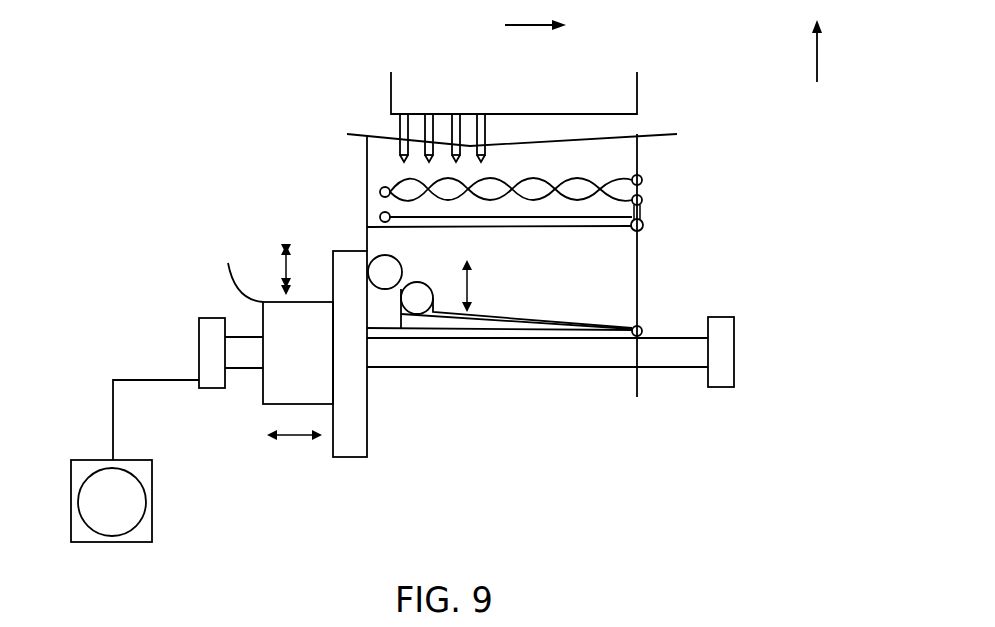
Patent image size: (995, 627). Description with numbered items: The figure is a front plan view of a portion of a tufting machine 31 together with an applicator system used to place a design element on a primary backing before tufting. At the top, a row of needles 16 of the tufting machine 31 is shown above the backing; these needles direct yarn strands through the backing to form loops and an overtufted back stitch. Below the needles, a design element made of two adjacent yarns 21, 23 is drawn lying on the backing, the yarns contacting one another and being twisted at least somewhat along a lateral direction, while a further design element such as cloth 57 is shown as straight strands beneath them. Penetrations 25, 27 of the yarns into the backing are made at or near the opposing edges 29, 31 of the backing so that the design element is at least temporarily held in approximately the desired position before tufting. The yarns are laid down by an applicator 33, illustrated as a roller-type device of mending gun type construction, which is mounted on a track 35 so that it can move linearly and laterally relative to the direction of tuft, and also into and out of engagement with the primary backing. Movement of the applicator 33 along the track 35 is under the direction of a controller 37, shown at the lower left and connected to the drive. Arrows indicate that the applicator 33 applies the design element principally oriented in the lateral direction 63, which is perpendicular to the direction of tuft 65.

The needles 16 is at (397, 130).
The yarn 21 is at (574, 180).
The yarn 23 is at (644, 200).
The penetration 25 is at (644, 180).
The penetration 27 is at (380, 217).
The edge 29 is at (386, 174).
The tufting machine 31 is at (405, 97).
The applicator 33 is at (417, 298).
The track 35 is at (662, 355).
The controller 37 is at (110, 501).
The cloth 57 is at (563, 228).
The lateral direction 63 is at (521, 26).
The direction of tuft 65 is at (817, 50).